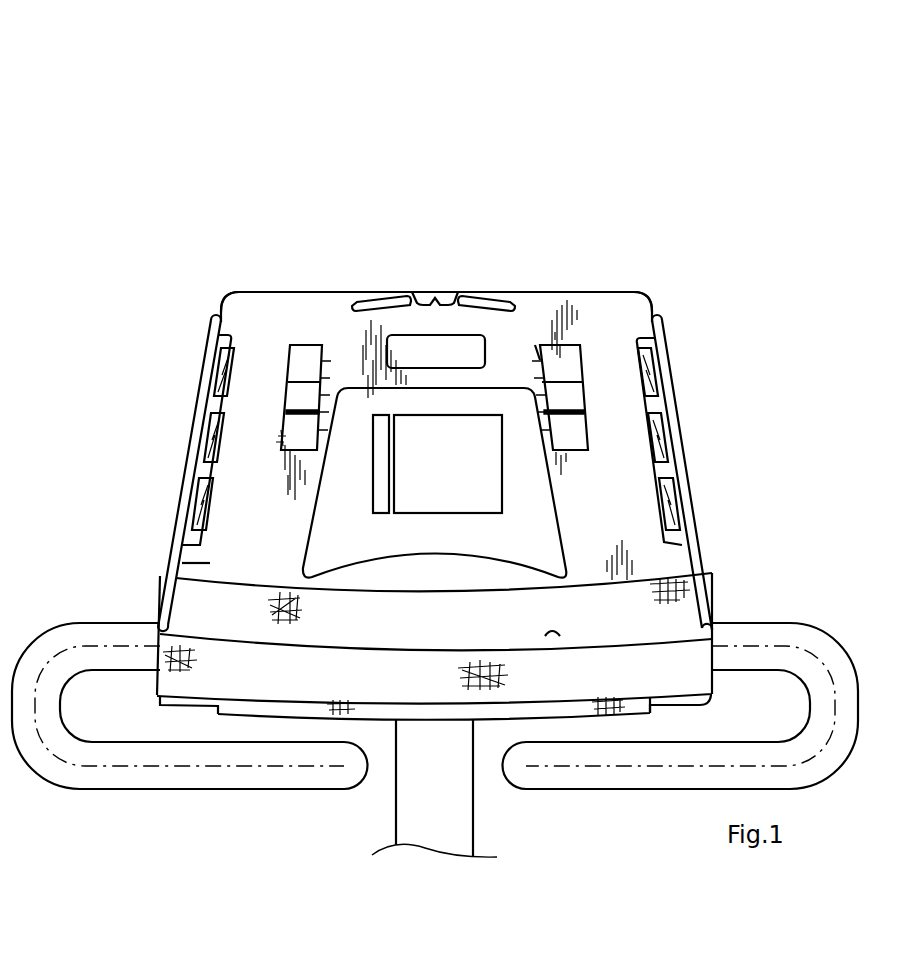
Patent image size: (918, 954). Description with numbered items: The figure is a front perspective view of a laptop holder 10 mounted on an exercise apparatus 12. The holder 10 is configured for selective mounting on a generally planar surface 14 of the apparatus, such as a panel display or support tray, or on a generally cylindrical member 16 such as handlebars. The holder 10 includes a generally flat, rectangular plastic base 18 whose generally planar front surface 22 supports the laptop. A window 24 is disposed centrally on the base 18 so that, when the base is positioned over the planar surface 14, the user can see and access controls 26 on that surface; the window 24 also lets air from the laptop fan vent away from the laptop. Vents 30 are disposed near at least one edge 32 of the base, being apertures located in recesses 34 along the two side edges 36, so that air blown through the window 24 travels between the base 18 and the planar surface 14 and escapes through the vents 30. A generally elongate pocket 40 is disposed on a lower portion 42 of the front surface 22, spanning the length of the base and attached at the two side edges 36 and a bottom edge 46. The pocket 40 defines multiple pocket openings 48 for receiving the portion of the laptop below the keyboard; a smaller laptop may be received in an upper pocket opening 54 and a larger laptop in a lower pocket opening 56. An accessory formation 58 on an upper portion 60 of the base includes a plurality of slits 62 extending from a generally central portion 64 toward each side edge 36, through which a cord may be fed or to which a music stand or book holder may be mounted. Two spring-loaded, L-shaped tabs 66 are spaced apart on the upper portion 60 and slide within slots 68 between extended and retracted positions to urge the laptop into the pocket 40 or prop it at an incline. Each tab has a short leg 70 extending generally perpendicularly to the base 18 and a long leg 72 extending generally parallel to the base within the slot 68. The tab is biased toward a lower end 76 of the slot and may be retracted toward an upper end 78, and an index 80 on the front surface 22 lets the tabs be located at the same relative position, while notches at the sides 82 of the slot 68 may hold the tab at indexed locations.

The laptop holder 10 is at (216, 141).
The exercise apparatus 12 is at (463, 823).
The generally planar surface 14 is at (200, 408).
The generally cylindrical member 16 is at (75, 768).
The base 18 is at (240, 305).
The front surface 22 is at (207, 563).
The window 24 is at (505, 398).
The controls 26 is at (380, 425).
The vents 30 is at (218, 355).
The edge 32 is at (493, 293).
The recesses 34 is at (198, 535).
The side edges 36 is at (213, 320).
The pocket 40 is at (688, 603).
The lower portion 42 is at (197, 687).
The bottom edge 46 is at (673, 705).
The pocket opening 48 is at (660, 580).
The upper pocket opening 54 is at (603, 580).
The lower pocket opening 56 is at (548, 636).
The accessory formation 58 is at (380, 302).
The upper portion 60 is at (275, 312).
The slits 62 is at (360, 302).
The central portion 64 is at (437, 300).
The tab 66 is at (287, 402).
The slots 68 is at (287, 347).
The short leg 70 is at (287, 415).
The long leg 72 is at (297, 392).
The lower end 76 is at (278, 467).
The upper end 78 is at (312, 345).
The index 80 is at (535, 345).
The sides 82 is at (280, 440).